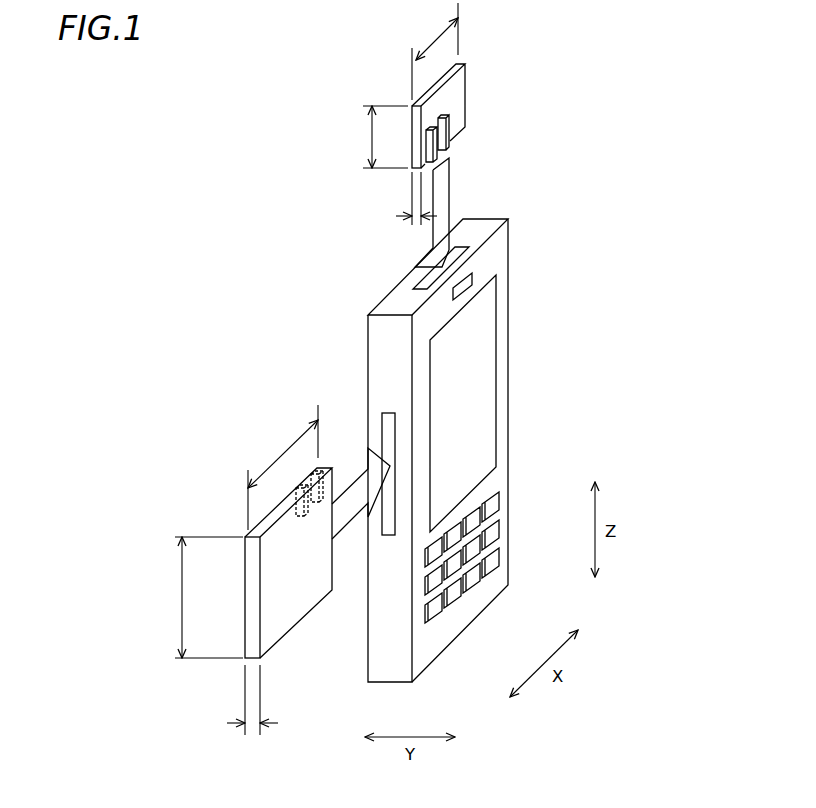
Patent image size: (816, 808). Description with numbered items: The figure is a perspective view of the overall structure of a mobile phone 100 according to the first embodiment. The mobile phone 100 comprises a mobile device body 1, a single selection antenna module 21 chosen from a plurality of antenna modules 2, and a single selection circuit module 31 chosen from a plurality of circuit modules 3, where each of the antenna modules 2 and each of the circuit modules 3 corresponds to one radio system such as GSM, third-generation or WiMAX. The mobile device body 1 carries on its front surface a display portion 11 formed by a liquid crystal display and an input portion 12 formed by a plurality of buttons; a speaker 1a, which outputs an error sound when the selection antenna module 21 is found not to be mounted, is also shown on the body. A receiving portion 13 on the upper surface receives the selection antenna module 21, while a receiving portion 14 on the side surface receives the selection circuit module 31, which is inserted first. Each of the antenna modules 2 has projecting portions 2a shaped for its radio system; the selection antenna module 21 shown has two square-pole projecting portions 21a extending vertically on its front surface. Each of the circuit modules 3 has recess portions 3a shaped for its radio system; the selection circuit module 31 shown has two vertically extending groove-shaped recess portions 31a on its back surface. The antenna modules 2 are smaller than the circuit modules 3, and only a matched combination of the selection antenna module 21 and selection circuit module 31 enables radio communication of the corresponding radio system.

The mobile phone 100 is at (593, 54).
The mobile device body 1 is at (500, 258).
The speaker 1a is at (471, 283).
The display portion 11 is at (483, 392).
The input portion 12 is at (497, 500).
The receiving portion 13 is at (418, 286).
The receiving portion 14 is at (384, 427).
The antenna modules 2 is at (486, 115).
The selection antenna module 21 is at (460, 97).
The projecting portions 2a is at (493, 138).
The projecting portions 21a is at (449, 133).
The circuit modules 3 is at (241, 592).
The selection circuit module 31 is at (273, 627).
The recess portions 3a is at (230, 493).
The recess portions 31a is at (297, 500).